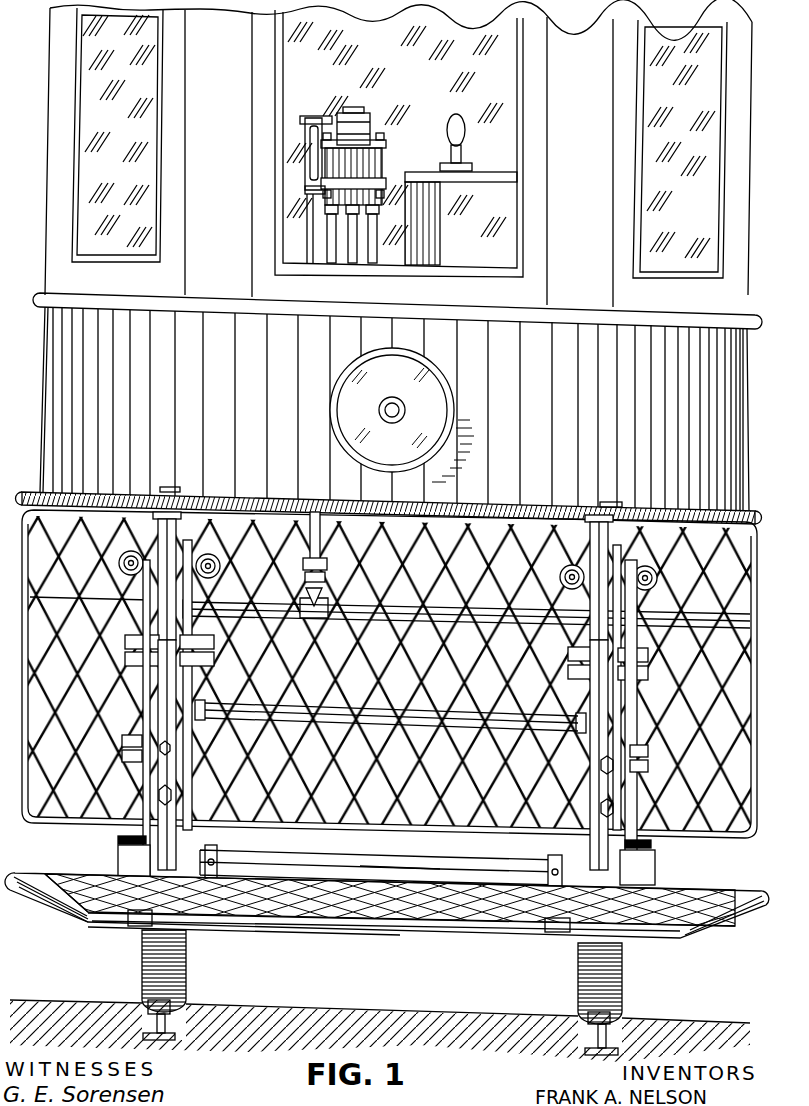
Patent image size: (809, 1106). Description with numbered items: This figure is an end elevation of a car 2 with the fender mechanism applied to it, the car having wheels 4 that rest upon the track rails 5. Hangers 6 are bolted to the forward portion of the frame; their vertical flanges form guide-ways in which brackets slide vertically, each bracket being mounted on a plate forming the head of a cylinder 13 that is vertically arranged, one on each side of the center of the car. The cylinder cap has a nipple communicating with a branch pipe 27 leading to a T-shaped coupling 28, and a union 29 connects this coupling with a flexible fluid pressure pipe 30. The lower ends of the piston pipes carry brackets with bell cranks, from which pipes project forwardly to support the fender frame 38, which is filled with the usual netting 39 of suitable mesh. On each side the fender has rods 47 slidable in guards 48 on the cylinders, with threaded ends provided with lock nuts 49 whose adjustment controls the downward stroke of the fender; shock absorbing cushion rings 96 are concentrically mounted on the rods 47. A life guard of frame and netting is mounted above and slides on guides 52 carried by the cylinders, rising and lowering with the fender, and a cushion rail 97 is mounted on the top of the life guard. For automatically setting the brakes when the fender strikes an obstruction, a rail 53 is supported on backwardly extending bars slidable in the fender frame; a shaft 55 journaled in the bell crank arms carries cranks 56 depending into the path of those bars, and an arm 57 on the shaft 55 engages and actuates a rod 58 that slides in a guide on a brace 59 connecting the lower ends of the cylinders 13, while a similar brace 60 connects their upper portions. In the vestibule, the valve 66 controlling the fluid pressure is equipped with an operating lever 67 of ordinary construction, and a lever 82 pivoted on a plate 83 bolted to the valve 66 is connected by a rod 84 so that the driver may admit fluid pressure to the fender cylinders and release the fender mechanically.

The car 2 is at (404, 255).
The wheels 4 is at (186, 981).
The track rails 5 is at (147, 1005).
The hangers 6 is at (145, 592).
The cylinder 13 is at (178, 771).
The branch pipe 27 is at (405, 622).
The T-shaped coupling 28 is at (320, 630).
The union 29 is at (322, 580).
The flexible fluid pressure pipe 30 is at (305, 545).
The fender frame 38 is at (62, 915).
The netting 39 is at (695, 890).
The rods 47 is at (143, 790).
The guards 48 is at (130, 860).
The lock nuts 49 is at (124, 754).
The guides 52 is at (168, 550).
The rail 53 is at (122, 931).
The shaft 55 is at (452, 868).
The cranks 56 is at (548, 870).
The arm 57 is at (312, 862).
The rod 58 is at (290, 775).
The brace 59 is at (372, 858).
The brace 60 is at (425, 700).
The valve 66 is at (374, 168).
The operating lever 67 is at (366, 118).
The lever 82 is at (318, 118).
The plate 83 is at (311, 190).
The rod 84 is at (310, 238).
The shock absorbing cushion rings 96 is at (118, 839).
The cushion rail 97 is at (742, 516).